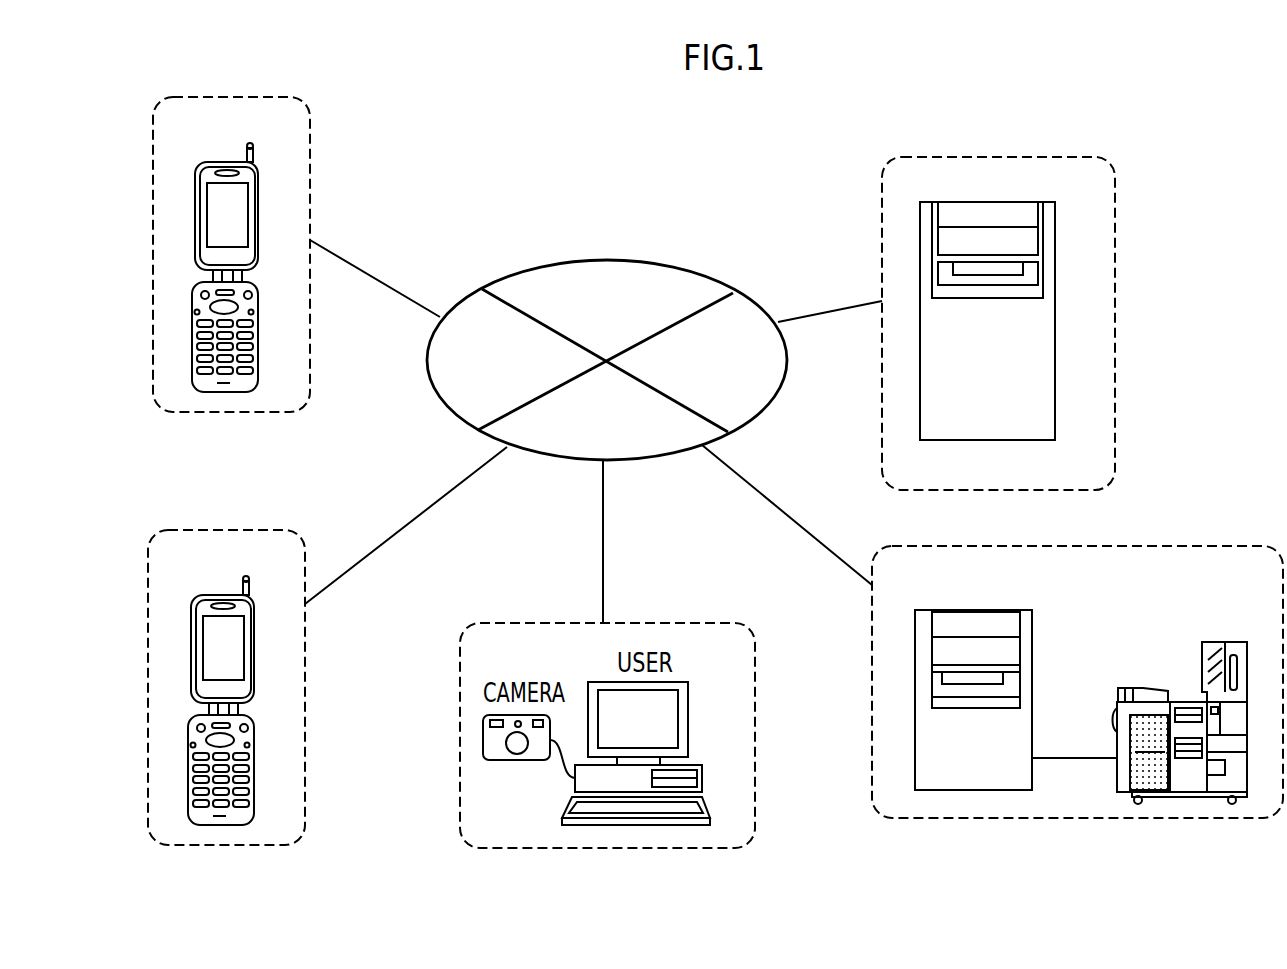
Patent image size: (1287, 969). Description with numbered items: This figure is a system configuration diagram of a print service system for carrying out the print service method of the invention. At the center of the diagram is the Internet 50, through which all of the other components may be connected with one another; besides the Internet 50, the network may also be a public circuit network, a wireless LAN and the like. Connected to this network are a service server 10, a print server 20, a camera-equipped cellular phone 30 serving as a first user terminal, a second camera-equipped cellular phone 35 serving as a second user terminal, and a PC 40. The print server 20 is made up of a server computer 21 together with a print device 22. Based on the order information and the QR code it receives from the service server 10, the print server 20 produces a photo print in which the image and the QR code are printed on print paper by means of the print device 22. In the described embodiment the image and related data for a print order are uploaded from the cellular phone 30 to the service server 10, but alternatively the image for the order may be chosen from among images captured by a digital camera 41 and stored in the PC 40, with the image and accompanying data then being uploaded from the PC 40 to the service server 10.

The service server 10 is at (1000, 157).
The print server 20 is at (1180, 546).
The server computer 21 is at (975, 790).
The print device 22 is at (1195, 800).
The camera-equipped cellular phone 30 is at (225, 393).
The camera-equipped cellular phone 35 is at (220, 826).
The PC 40 is at (690, 713).
The digital camera 41 is at (523, 760).
The Internet 50 is at (693, 270).